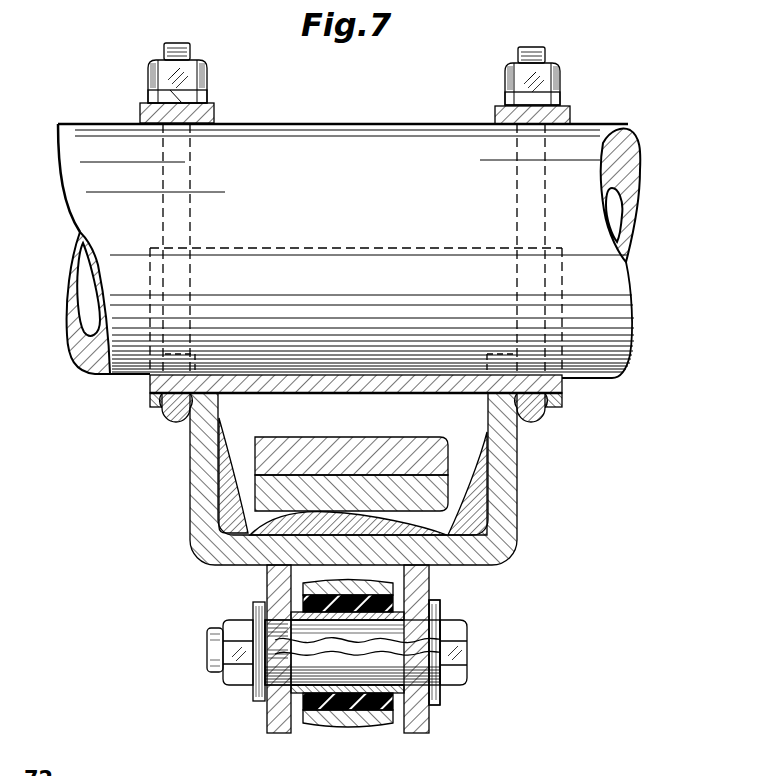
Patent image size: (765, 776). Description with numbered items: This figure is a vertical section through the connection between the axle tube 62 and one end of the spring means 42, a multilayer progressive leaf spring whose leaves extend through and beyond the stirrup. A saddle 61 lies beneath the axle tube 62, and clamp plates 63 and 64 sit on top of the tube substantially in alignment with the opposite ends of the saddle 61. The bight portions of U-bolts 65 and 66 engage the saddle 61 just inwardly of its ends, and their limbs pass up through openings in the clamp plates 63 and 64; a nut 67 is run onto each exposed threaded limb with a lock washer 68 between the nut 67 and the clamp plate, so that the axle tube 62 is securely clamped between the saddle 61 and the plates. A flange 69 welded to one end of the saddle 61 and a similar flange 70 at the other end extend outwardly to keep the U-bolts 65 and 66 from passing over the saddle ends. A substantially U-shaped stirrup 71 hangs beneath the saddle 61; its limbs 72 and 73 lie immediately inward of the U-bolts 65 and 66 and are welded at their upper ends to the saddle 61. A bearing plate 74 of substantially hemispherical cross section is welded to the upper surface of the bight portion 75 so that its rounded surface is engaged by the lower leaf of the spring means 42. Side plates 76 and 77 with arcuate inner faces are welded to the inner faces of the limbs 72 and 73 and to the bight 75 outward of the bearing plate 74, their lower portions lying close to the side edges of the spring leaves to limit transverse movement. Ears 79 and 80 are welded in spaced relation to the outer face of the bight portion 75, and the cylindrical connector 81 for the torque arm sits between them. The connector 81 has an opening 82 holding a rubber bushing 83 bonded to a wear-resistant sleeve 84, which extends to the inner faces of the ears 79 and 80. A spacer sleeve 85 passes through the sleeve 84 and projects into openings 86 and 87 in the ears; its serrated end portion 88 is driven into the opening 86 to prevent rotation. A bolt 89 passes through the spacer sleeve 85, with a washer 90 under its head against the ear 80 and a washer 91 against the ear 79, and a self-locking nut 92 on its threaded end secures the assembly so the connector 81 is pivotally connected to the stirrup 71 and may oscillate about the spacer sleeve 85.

The spring means 42 is at (322, 438).
The saddle 61 is at (300, 375).
The axle tube 62 is at (338, 207).
The clamp plate 63 is at (216, 115).
The clamp plate 64 is at (571, 118).
The U-bolt 65 is at (181, 46).
The U-bolt 66 is at (546, 57).
The nut 67 is at (148, 68).
The lock washer 68 is at (148, 100).
The flange 69 is at (150, 402).
The flange 70 is at (562, 401).
The stirrup 71 is at (519, 547).
The limb 72 is at (197, 500).
The limb 73 is at (519, 478).
The bearing plate 74 is at (452, 524).
The bight portion 75 is at (456, 566).
The side plate 76 is at (237, 458).
The side plate 77 is at (479, 450).
The ear 79 is at (267, 600).
The ear 80 is at (429, 589).
The connector 81 is at (300, 583).
The opening 82 is at (440, 602).
The bushing 83 is at (348, 712).
The sleeve 84 is at (297, 700).
The spacer sleeve 85 is at (347, 640).
The opening 86 is at (294, 619).
The opening 87 is at (398, 622).
The serrated end portion 88 is at (282, 642).
The bolt 89 is at (411, 656).
The washer 90 is at (436, 706).
The washer 91 is at (254, 701).
The self-locking nut 92 is at (232, 654).